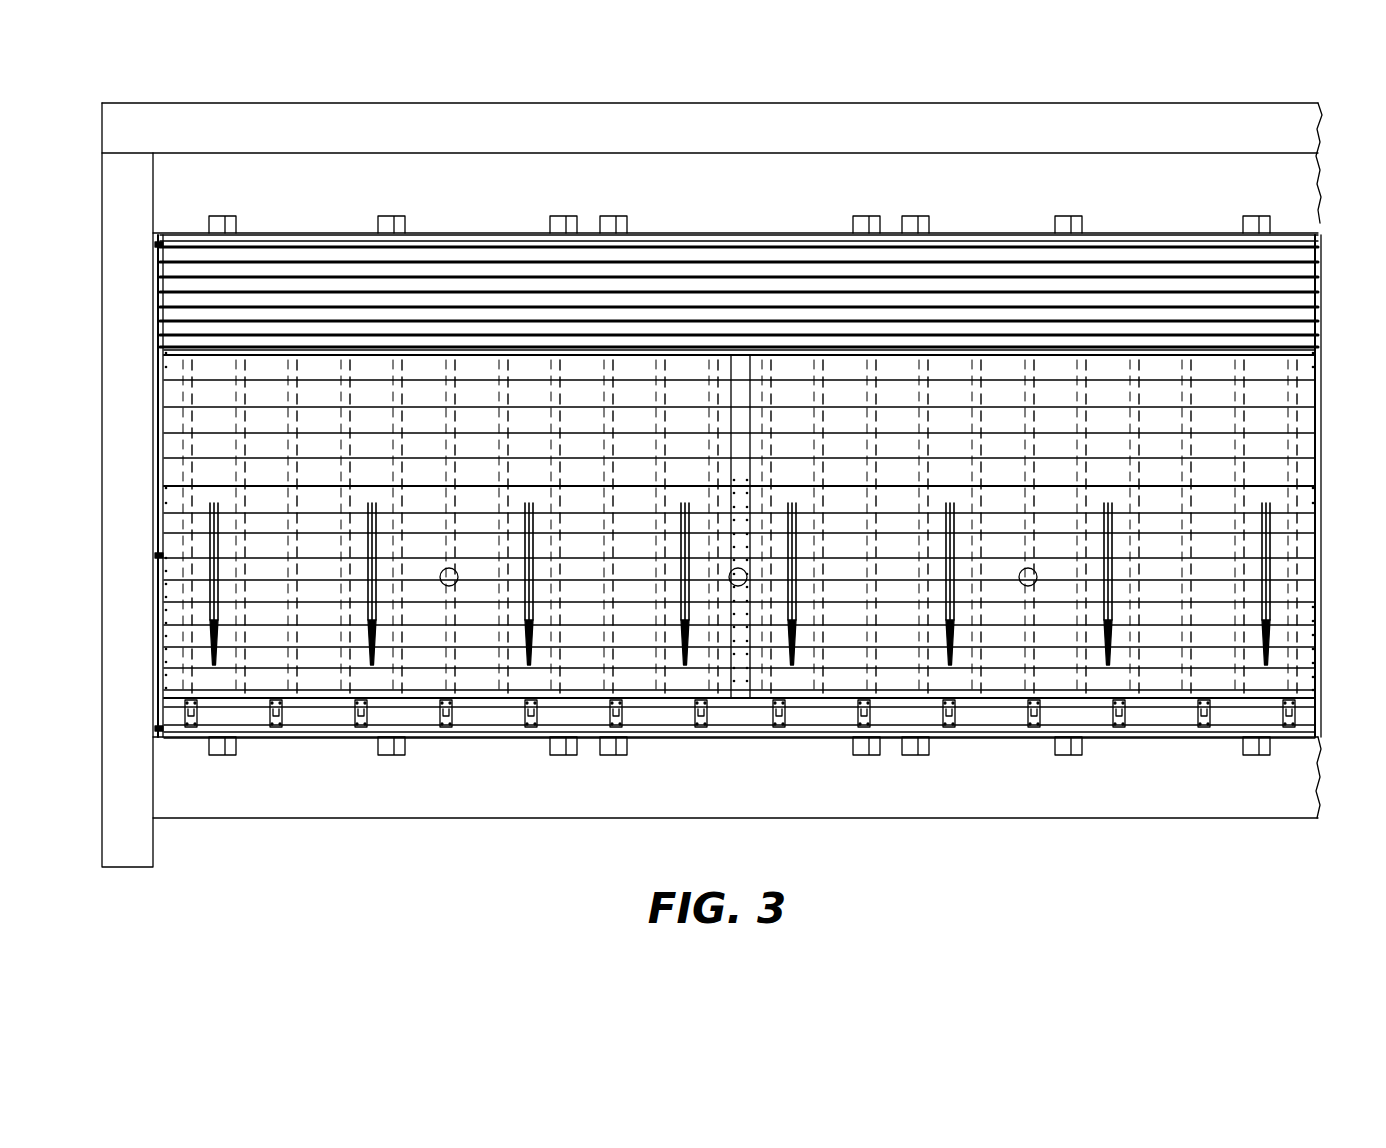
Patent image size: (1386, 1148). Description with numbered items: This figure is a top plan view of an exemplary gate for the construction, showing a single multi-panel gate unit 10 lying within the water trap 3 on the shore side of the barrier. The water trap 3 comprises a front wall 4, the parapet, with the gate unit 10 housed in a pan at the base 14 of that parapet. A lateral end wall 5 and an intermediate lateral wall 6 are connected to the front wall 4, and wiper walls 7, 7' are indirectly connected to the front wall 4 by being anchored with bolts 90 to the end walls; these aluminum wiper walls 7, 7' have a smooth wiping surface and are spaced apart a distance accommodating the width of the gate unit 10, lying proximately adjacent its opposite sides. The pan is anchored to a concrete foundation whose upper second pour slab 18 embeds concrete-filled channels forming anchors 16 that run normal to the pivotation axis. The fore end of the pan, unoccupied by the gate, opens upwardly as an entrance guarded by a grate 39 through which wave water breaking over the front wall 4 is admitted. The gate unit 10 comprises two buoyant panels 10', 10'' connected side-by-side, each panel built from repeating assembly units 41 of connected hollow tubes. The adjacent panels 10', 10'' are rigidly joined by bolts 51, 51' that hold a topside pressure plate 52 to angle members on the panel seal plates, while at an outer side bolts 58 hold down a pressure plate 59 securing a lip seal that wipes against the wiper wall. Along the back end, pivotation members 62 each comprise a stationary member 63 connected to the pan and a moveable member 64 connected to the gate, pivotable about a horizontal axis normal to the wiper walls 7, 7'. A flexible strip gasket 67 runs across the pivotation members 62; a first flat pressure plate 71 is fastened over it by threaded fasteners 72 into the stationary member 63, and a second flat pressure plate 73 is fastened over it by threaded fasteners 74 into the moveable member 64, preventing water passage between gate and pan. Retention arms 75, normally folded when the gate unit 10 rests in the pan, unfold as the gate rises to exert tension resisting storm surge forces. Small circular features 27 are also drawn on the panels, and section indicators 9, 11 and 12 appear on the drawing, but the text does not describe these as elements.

The water trap 3 is at (482, 195).
The front wall 4 is at (950, 112).
The lateral end wall 5 is at (130, 322).
The intermediate lateral wall 6 is at (977, 220).
The wiper wall 7 is at (334, 619).
The wiper wall 7' is at (1349, 438).
The section line 9 is at (148, 622).
The gate unit 10 is at (739, 399).
The buoyant panel 10' is at (398, 432).
The buoyant panel 10'' is at (1078, 432).
The section line 11 is at (682, 487).
The section line 12 is at (1250, 697).
The base of parapet 14 is at (320, 197).
The anchors 16 is at (222, 216).
The second pour slab 18 is at (1295, 785).
The pin 27 is at (454, 570).
The grate 39 is at (1295, 275).
The assembly unit 41 is at (282, 405).
The bolt 51 is at (796, 581).
The bolt 51' is at (702, 467).
The topside pressure plate 52 is at (740, 450).
The bolts 58 is at (165, 502).
The pressure plate 59 is at (160, 397).
The pivotation member 62 is at (197, 712).
The stationary member 63 is at (443, 718).
The moveable member 64 is at (450, 703).
The flexible strip gasket 67 is at (488, 713).
The first flat pressure plate 71 is at (735, 723).
The threaded fasteners 72 is at (772, 725).
The second flat pressure plate 73 is at (823, 703).
The threaded fasteners 74 is at (783, 703).
The retention arms 75 is at (216, 527).
The bolts 90 is at (155, 245).